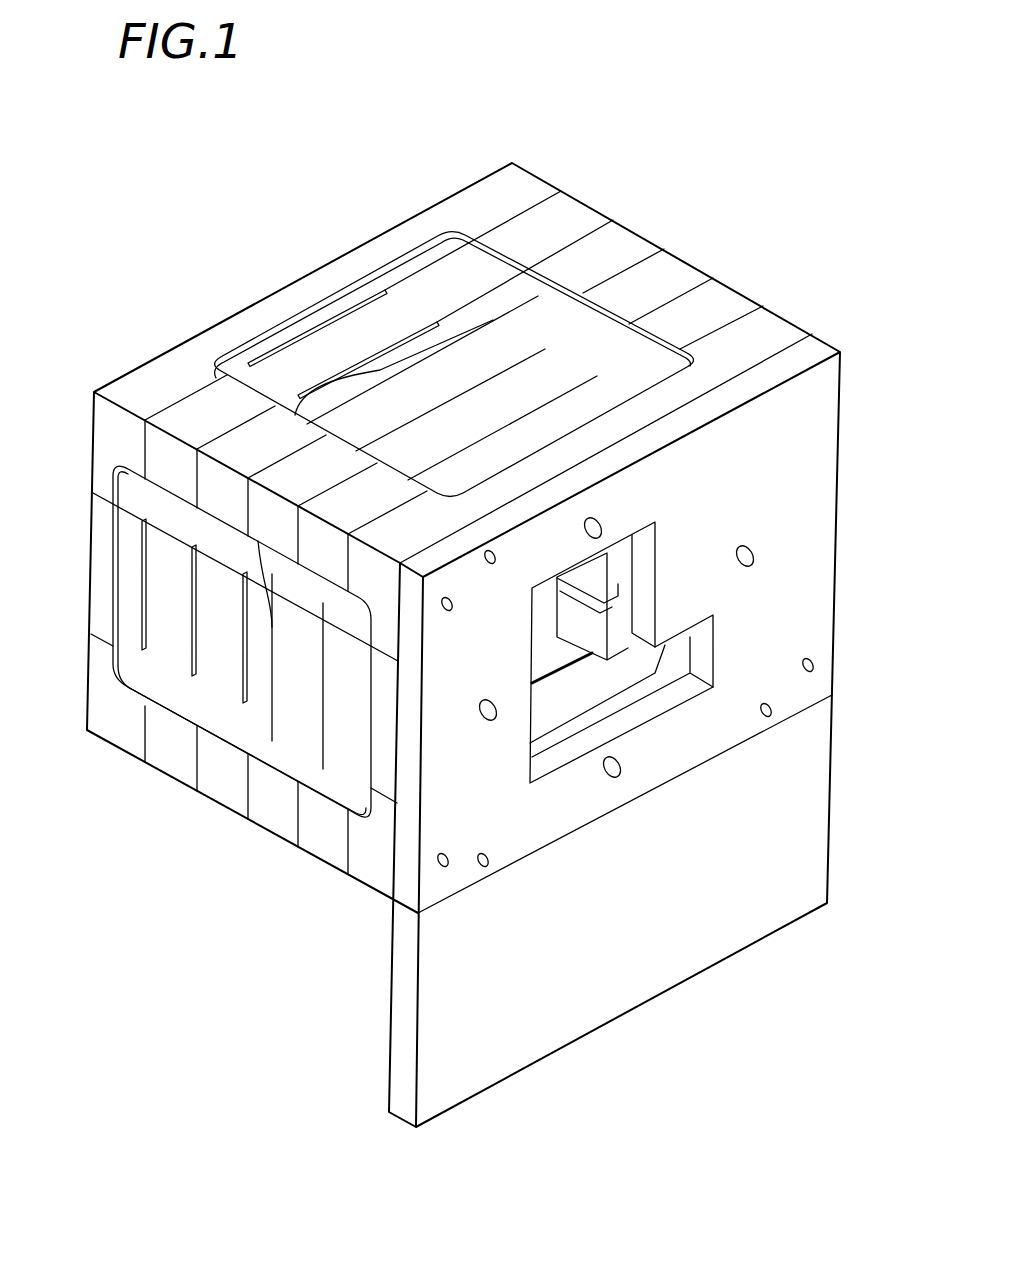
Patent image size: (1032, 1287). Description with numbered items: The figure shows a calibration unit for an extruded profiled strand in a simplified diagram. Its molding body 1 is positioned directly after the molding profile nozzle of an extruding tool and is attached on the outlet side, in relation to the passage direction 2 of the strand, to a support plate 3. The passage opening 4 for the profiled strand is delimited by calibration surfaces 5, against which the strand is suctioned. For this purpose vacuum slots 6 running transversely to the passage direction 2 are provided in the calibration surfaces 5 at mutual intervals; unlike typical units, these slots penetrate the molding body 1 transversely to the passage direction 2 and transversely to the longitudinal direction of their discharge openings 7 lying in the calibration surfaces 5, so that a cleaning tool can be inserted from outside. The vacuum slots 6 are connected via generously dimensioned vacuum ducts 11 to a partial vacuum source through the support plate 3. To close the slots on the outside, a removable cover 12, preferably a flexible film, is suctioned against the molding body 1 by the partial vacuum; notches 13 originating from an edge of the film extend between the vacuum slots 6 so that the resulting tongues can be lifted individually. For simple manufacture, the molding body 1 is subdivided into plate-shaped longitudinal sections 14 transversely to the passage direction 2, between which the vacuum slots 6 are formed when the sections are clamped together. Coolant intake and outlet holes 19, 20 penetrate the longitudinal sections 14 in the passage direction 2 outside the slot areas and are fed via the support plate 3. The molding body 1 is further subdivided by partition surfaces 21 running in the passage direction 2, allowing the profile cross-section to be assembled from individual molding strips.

The molding body 1 is at (250, 295).
The passage direction 2 is at (760, 754).
The support plate 3 is at (467, 1022).
The passage opening 4 is at (610, 631).
The calibration surfaces 5 is at (563, 698).
The vacuum slots 6 is at (377, 347).
The discharge openings 7 is at (555, 608).
The vacuum ducts 11 is at (603, 526).
The removable cover 12 is at (620, 338).
The notches 13 is at (567, 392).
The longitudinal sections 14 is at (548, 228).
The intake holes 19 is at (491, 551).
The outlet holes 20 is at (447, 598).
The partition surfaces 21 is at (105, 470).